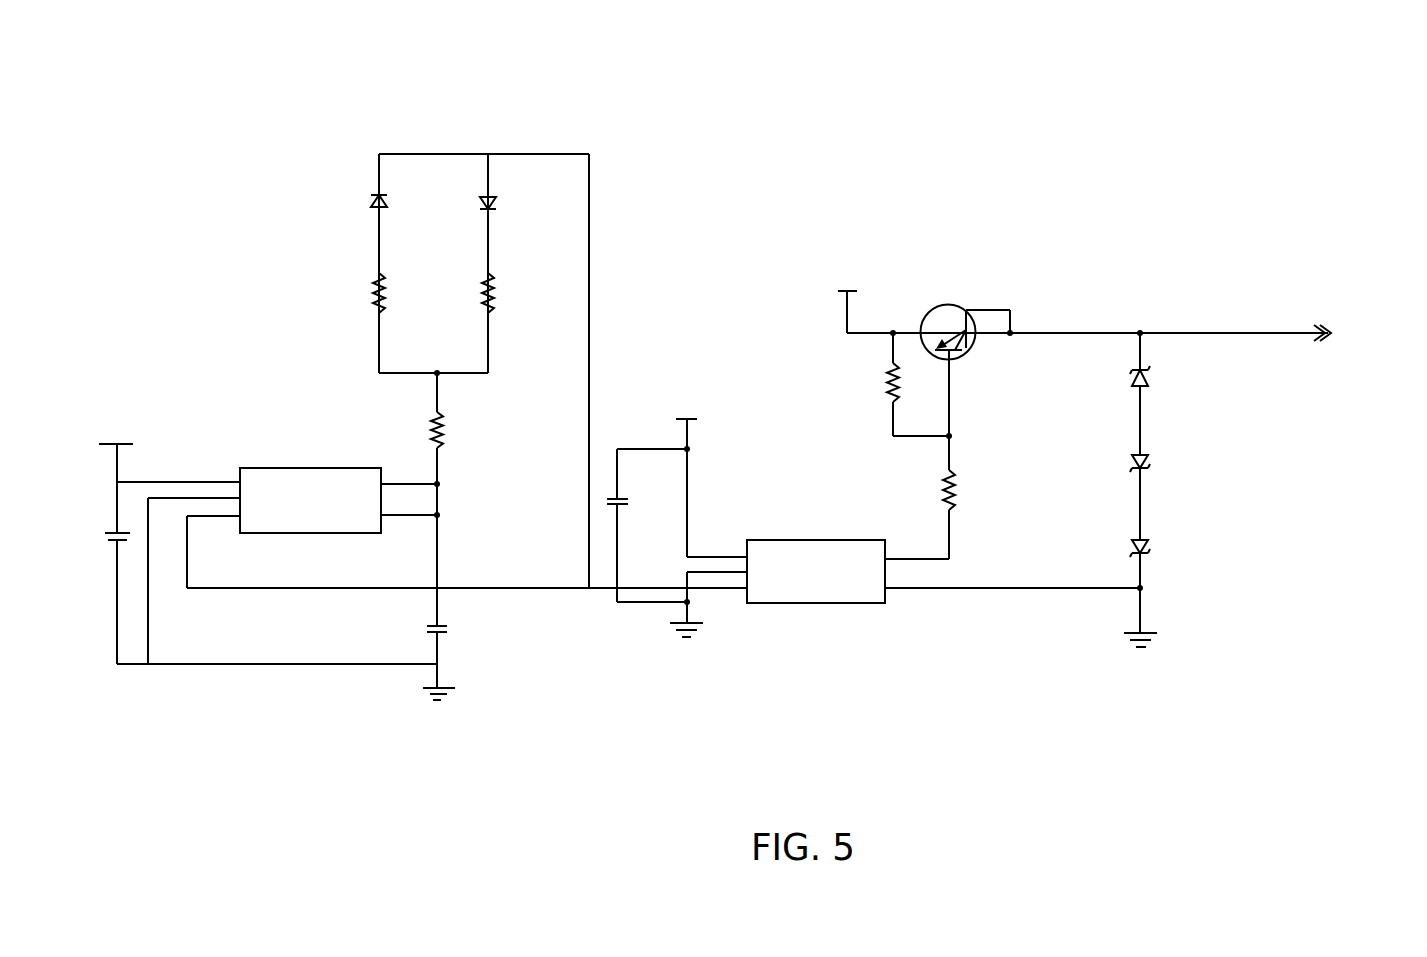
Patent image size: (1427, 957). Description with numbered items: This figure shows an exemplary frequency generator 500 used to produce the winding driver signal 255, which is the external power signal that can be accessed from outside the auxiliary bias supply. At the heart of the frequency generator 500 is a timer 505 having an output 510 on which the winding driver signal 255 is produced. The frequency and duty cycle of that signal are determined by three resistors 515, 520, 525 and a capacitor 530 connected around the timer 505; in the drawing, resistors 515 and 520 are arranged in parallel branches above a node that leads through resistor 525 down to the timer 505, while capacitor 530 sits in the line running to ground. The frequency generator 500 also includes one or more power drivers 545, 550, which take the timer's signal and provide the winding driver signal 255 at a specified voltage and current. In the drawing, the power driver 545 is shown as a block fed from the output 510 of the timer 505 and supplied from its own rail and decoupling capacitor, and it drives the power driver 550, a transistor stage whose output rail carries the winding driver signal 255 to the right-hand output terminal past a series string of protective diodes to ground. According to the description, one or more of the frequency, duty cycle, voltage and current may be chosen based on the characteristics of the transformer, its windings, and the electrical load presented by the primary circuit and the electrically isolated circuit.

The frequency generator 500 is at (382, 92).
The timer 505 is at (330, 514).
The output 510 is at (285, 590).
The resistor 515 is at (388, 290).
The resistor 520 is at (497, 290).
The resistor 525 is at (446, 427).
The capacitor 530 is at (448, 628).
The power driver 545 is at (836, 587).
The power driver 550 is at (950, 305).
The winding driver signal 255 is at (1333, 331).